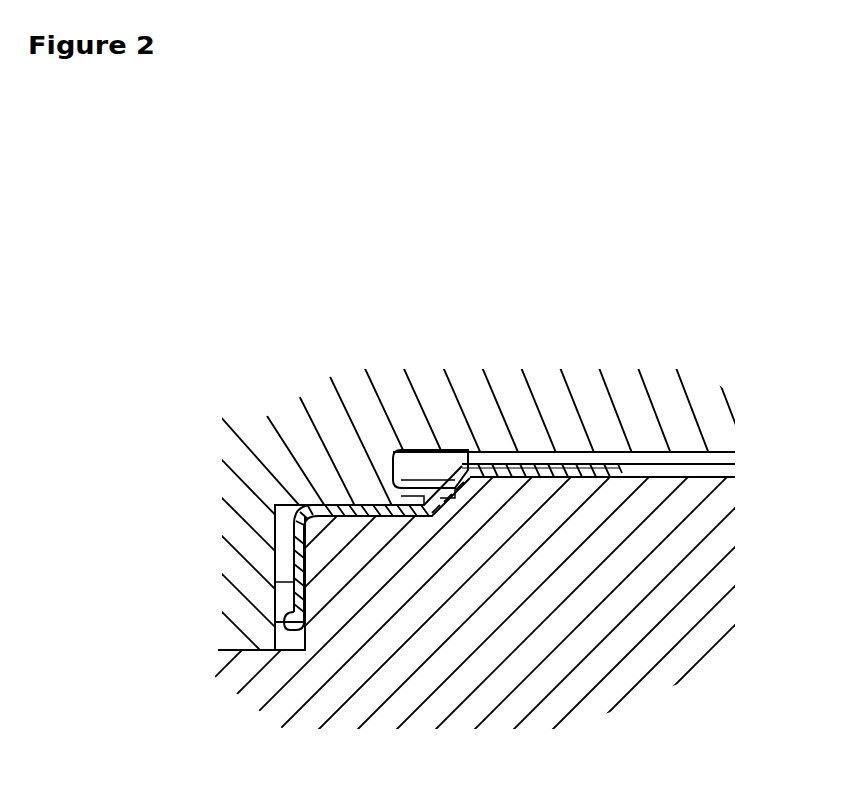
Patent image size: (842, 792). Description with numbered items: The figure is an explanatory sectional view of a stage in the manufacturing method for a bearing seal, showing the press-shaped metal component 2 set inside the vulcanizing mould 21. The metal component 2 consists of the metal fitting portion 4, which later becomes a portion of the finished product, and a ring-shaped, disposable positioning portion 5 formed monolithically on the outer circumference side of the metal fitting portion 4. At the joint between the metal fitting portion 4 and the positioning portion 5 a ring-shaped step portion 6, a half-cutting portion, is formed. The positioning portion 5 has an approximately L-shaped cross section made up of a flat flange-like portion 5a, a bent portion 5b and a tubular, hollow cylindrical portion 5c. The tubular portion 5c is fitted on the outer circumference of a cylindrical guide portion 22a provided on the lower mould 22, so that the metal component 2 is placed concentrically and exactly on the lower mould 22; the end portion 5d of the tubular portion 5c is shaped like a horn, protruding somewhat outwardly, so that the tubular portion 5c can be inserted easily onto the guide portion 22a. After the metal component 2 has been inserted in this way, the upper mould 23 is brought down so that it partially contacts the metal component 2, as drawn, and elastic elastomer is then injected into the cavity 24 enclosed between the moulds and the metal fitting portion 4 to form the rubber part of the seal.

The metal component 2 is at (466, 452).
The metal fitting portion 4 is at (553, 463).
The positioning portion 5 is at (345, 503).
The flat portion 5a is at (390, 513).
The bent portion 5b is at (312, 505).
The tubular portion 5c is at (307, 520).
The end portion 5d is at (297, 617).
The step portion 6 is at (413, 492).
The vulcanizing mould 21 is at (667, 369).
The lower mould 22 is at (722, 598).
The guide portion 22a is at (297, 567).
The upper mould 23 is at (713, 412).
The cavity 24 is at (515, 460).